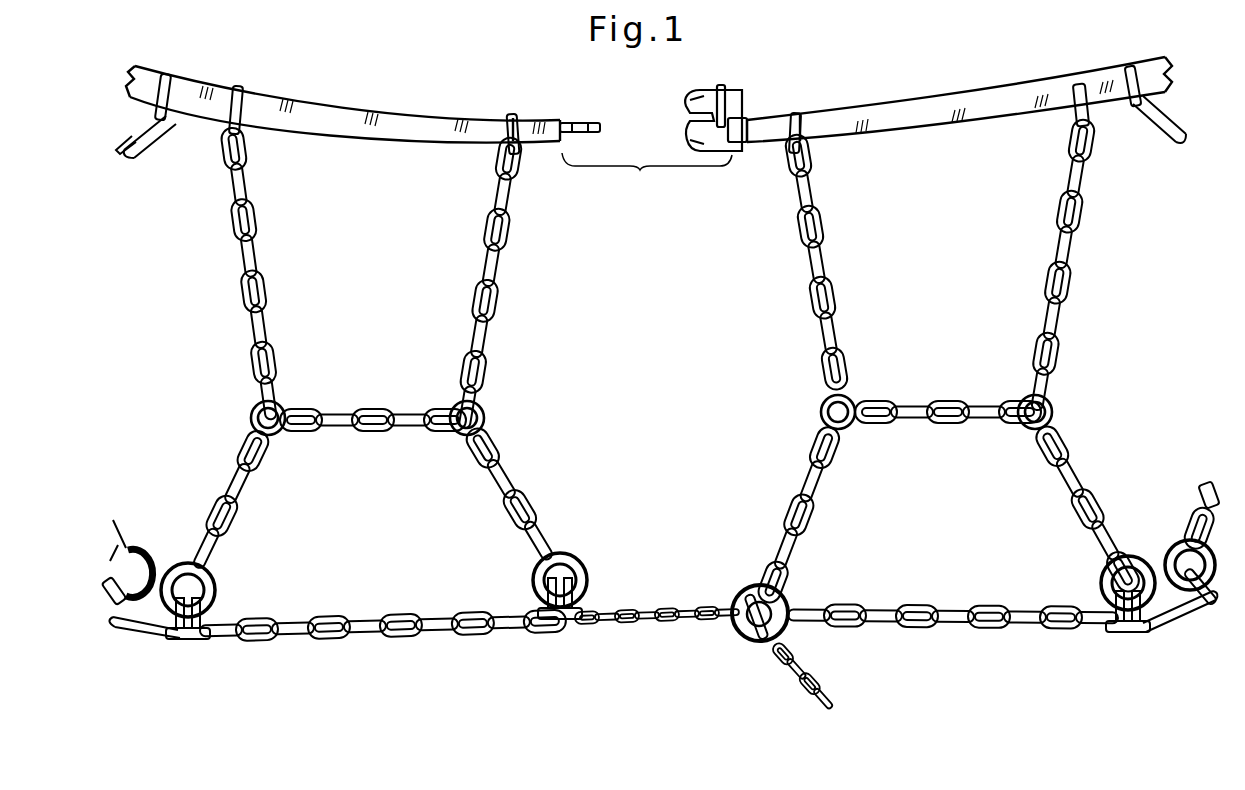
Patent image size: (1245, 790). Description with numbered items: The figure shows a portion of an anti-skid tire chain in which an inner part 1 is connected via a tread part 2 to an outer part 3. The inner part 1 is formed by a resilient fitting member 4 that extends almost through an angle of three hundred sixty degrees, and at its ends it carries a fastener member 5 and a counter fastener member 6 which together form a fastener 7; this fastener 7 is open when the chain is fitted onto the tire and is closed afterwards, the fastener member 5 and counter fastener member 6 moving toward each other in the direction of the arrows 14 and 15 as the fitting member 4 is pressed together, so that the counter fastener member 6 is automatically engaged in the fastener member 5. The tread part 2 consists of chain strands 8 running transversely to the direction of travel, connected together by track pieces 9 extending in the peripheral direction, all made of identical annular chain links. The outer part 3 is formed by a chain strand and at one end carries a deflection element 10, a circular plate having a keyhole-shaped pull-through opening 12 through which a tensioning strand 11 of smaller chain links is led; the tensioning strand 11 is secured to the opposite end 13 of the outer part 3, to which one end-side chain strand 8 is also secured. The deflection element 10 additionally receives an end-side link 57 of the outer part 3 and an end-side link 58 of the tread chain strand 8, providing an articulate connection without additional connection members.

The inner part 1 is at (998, 93).
The tread part 2 is at (1071, 326).
The outer part 3 is at (652, 585).
The fitting member 4 is at (390, 121).
The fastener member 5 is at (728, 75).
The counter fastener member 6 is at (578, 121).
The fastener 7 is at (639, 174).
The chain strands 8 is at (507, 470).
The track pieces 9 is at (943, 407).
The deflection element 10 is at (740, 593).
The tensioning strand 11 is at (688, 609).
The pull-through opening 12 is at (771, 602).
The end of the outer part 13 is at (587, 603).
The arrow 14 is at (680, 183).
The arrow 15 is at (606, 182).
The end-side link of the outer part 57 is at (810, 616).
The end-side link of the tread chain strand 58 is at (767, 557).